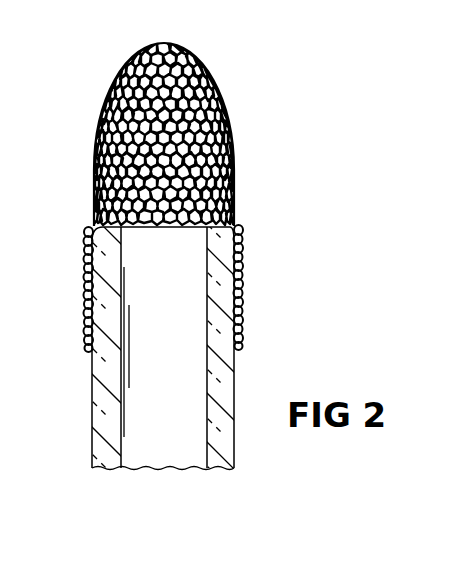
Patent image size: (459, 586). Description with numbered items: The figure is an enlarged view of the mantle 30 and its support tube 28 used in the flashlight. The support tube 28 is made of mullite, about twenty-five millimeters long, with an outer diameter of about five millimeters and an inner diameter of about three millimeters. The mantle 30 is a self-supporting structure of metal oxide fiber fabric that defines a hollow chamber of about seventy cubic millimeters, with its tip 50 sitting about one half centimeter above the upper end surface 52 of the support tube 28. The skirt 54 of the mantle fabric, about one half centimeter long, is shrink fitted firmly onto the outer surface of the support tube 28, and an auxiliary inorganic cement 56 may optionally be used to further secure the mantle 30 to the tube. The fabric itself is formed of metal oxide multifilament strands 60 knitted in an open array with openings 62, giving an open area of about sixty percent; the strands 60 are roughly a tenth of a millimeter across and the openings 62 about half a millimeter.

The support tube 28 is at (98, 397).
The mantle 30 is at (88, 153).
The tip 50 is at (163, 42).
The upper end surface 52 is at (92, 218).
The skirt 54 is at (88, 312).
The inorganic cement 56 is at (242, 273).
The metal oxide multifilament strands 60 is at (222, 123).
The openings 62 is at (112, 99).